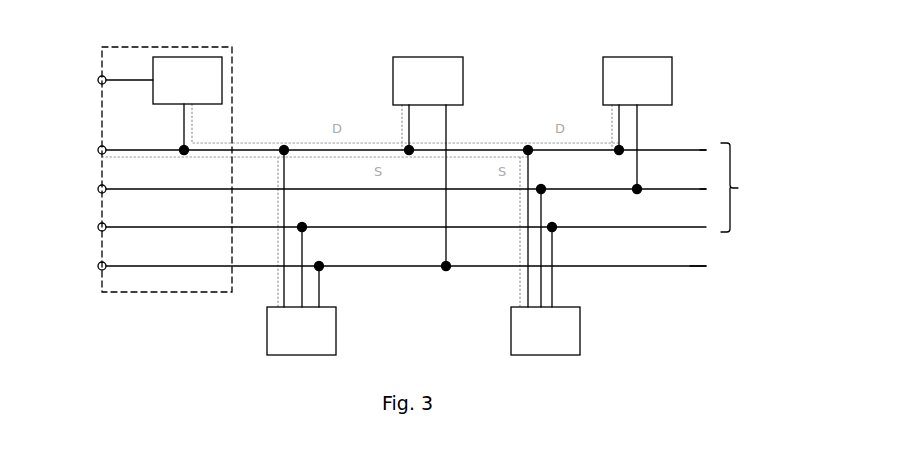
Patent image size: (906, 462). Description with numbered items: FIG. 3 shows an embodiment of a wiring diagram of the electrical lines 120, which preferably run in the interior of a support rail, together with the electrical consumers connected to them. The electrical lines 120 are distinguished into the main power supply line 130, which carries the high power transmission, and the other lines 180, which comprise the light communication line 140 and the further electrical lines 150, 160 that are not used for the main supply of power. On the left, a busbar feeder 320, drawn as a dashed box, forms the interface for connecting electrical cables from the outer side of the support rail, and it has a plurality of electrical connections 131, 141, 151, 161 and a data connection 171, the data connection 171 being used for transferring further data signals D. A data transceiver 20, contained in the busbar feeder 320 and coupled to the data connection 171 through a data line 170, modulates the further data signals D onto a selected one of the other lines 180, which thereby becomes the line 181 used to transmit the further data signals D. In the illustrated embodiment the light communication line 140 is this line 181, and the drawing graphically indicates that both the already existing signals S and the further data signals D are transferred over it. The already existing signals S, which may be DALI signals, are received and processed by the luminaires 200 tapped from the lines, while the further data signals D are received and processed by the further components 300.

The data transceiver 20 is at (187, 103).
The electrical lines 120 is at (718, 281).
The main power supply line 130 is at (406, 256).
The electrical connection 131 is at (98, 267).
The light communication line 140 is at (406, 140).
The electrical connection 141 is at (98, 151).
The electrical line 150 is at (406, 179).
The electrical connection 151 is at (98, 190).
The electrical line 160 is at (406, 218).
The electrical connection 161 is at (98, 228).
The data line 170 is at (129, 71).
The data connection 171 is at (98, 81).
The other lines 180 is at (754, 187).
The line used to transmit the further data signals 181 is at (707, 142).
The luminaires 200 is at (423, 252).
The further components 300 is at (532, 161).
The busbar feeder 320 is at (232, 47).